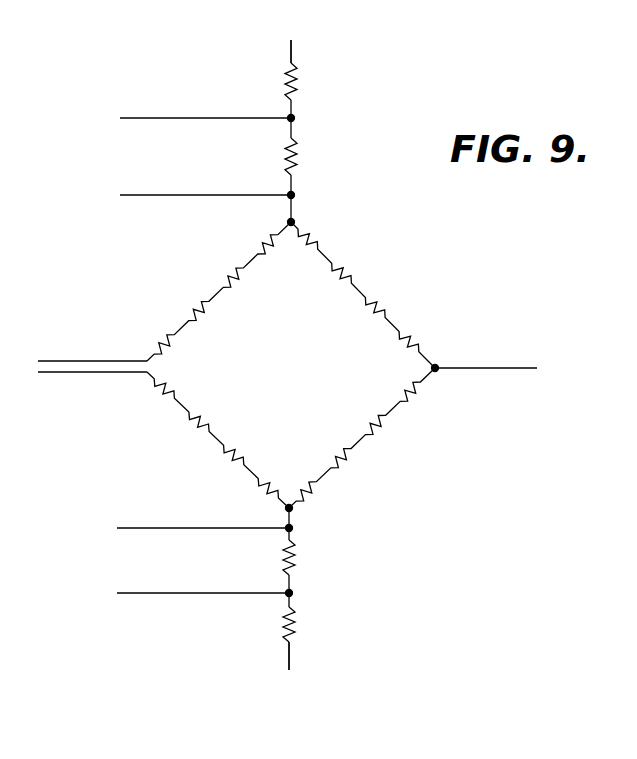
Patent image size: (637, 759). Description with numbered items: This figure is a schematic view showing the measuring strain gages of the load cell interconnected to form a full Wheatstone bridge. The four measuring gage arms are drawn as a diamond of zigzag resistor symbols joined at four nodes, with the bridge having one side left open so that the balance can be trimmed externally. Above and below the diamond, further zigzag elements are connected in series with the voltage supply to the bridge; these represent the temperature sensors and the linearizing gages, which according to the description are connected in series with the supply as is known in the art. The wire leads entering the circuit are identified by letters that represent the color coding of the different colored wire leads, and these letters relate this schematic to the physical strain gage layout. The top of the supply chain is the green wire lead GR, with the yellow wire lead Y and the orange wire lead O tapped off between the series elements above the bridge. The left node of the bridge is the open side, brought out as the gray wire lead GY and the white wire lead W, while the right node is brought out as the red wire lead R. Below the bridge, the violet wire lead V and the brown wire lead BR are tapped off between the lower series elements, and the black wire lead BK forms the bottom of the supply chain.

The green wire lead GR is at (309, 48).
The yellow wire lead Y is at (205, 105).
The orange wire lead O is at (205, 182).
The gray wire lead GY is at (91, 347).
The white wire lead W is at (92, 387).
The red wire lead R is at (496, 372).
The violet wire lead V is at (203, 517).
The brown wire lead BR is at (203, 581).
The black wire lead BK is at (290, 671).